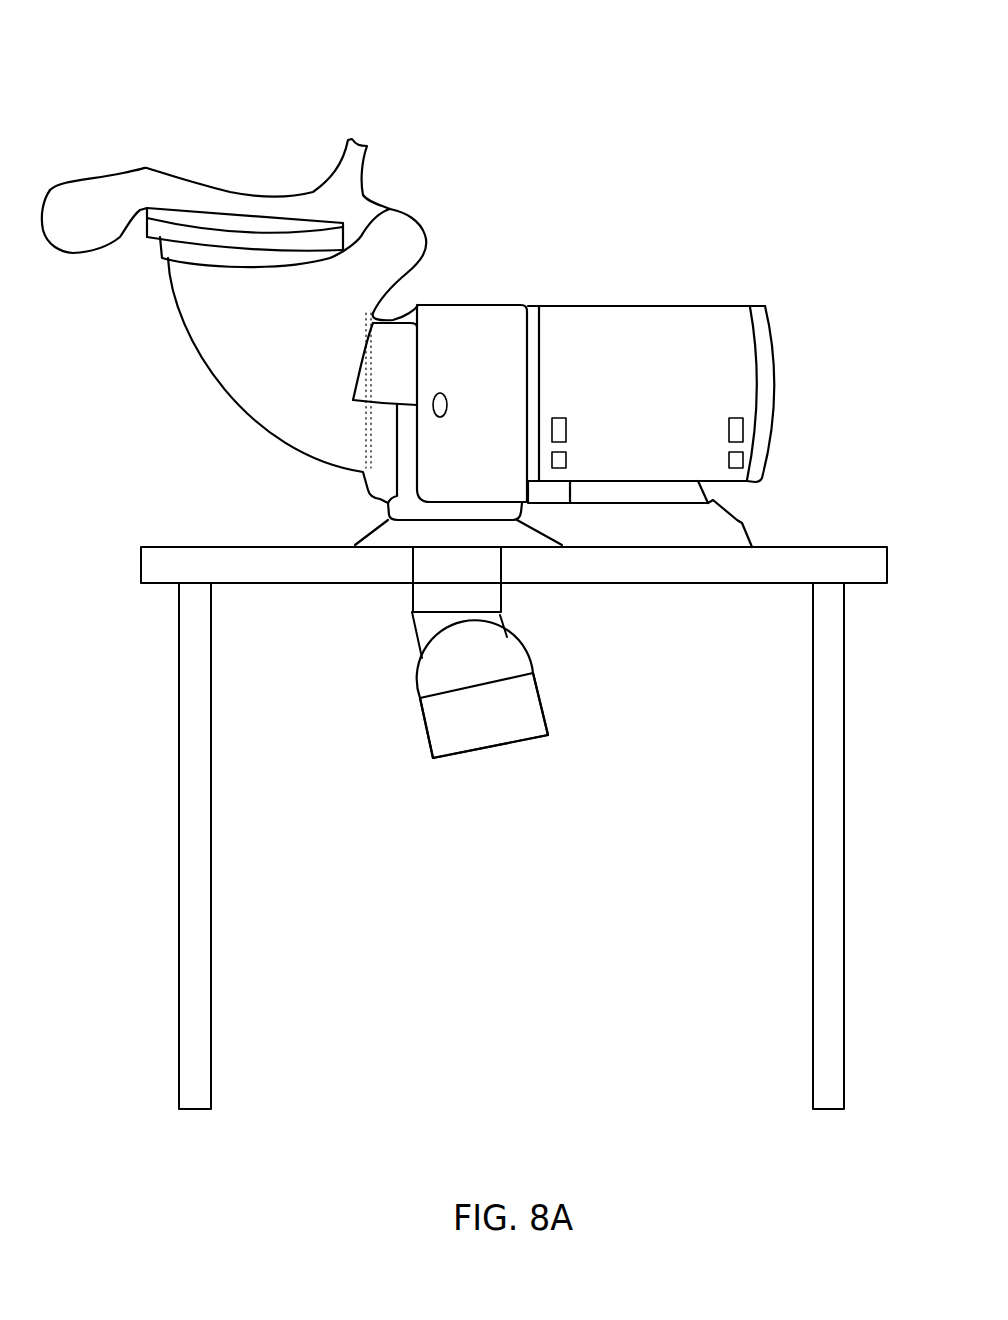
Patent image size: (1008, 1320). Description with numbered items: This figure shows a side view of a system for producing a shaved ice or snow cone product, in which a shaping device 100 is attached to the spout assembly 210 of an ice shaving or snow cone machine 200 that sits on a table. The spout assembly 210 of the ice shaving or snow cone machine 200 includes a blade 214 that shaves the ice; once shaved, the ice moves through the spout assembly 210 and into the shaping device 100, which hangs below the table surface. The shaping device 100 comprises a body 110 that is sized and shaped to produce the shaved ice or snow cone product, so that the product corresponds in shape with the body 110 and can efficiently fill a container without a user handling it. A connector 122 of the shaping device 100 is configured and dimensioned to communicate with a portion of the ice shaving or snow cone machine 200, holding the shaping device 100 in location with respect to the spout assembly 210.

The ice shaving or snow cone machine 200 is at (273, 183).
The blade 214 is at (370, 317).
The spout assembly 210 is at (433, 570).
The connector 122 is at (500, 615).
The shaping device 100 is at (415, 724).
The body 110 is at (503, 723).